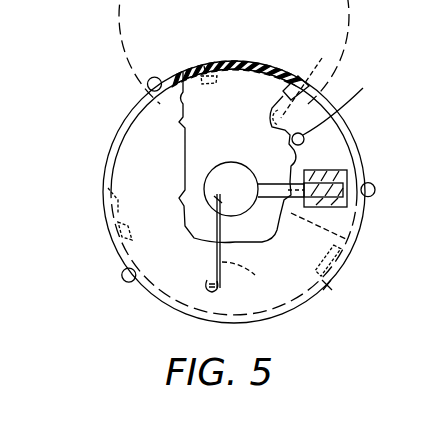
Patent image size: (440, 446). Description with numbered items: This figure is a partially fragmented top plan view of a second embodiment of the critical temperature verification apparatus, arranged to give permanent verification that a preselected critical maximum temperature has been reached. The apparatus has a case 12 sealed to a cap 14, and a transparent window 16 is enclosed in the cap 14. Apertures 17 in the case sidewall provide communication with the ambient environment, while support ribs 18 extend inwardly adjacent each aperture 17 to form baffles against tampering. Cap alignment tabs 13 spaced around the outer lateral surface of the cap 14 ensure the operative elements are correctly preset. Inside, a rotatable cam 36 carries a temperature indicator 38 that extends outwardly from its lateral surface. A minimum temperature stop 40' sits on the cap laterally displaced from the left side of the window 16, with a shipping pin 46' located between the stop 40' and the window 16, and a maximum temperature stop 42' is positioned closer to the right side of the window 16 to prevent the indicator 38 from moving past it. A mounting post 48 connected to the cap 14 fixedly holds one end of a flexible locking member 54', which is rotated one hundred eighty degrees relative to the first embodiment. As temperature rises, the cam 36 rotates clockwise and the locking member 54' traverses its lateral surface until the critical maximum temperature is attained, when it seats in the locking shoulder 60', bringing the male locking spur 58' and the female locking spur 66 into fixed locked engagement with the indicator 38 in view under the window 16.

The case 12 is at (267, 64).
The cap alignment tabs 13 is at (150, 76).
The cap 14 is at (127, 113).
The transparent window 16 is at (360, 209).
The apertures 17 is at (208, 66).
The support ribs 18 is at (218, 72).
The rotatable cam 36 is at (255, 165).
The temperature indicator 38 is at (325, 172).
The minimum temperature stop 40' is at (310, 76).
The maximum temperature stop 42' is at (350, 237).
The shipping pin 46' is at (338, 107).
The mounting post 48 is at (209, 281).
The flexible locking member 54' is at (253, 279).
The male locking spur 58' is at (205, 206).
The locking shoulder 60' is at (231, 170).
The female locking spur 66 is at (215, 200).